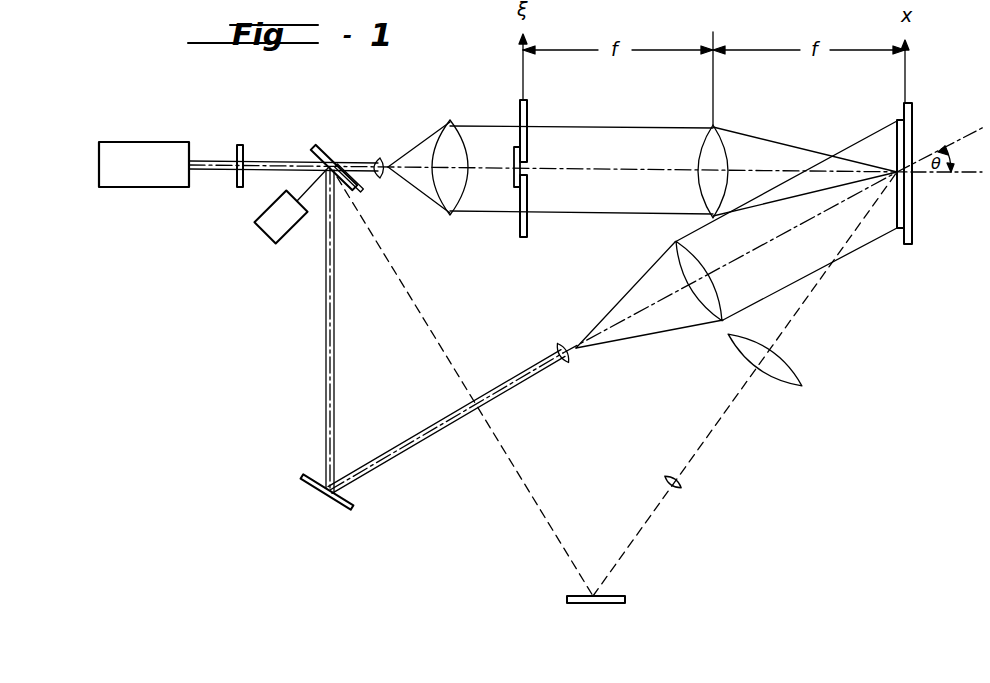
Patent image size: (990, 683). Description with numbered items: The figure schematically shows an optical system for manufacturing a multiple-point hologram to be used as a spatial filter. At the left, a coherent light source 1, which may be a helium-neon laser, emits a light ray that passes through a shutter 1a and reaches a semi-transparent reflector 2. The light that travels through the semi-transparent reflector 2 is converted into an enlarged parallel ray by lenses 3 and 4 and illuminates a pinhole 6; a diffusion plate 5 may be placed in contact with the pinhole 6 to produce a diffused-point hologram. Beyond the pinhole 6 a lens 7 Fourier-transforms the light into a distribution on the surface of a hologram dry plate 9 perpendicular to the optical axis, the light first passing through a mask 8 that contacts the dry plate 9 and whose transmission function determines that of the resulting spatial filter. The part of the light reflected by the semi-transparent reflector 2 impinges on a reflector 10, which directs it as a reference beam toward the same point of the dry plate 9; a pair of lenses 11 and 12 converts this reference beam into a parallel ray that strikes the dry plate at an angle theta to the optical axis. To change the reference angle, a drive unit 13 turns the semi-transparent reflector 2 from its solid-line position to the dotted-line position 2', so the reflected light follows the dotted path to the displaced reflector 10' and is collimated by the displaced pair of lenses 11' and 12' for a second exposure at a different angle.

The coherent light source 1 is at (135, 179).
The shutter 1a is at (244, 150).
The semi-transparent reflector 2 is at (334, 152).
The dotted line position of semi-transparent reflector 2' is at (331, 153).
The lens 3 is at (381, 157).
The lens 4 is at (450, 120).
The diffusion plate 5 is at (514, 155).
The pinhole 6 is at (528, 110).
The lens 7 is at (715, 128).
The mask 8 is at (897, 124).
The hologram dry plate 9 is at (913, 125).
The reflector 10 is at (323, 504).
The displaced reflector 10' is at (625, 590).
The lens 11 is at (585, 364).
The displaced lens 11' is at (702, 485).
The lens 12 is at (698, 298).
The displaced lens 12' is at (788, 360).
The drive unit 13 is at (291, 228).